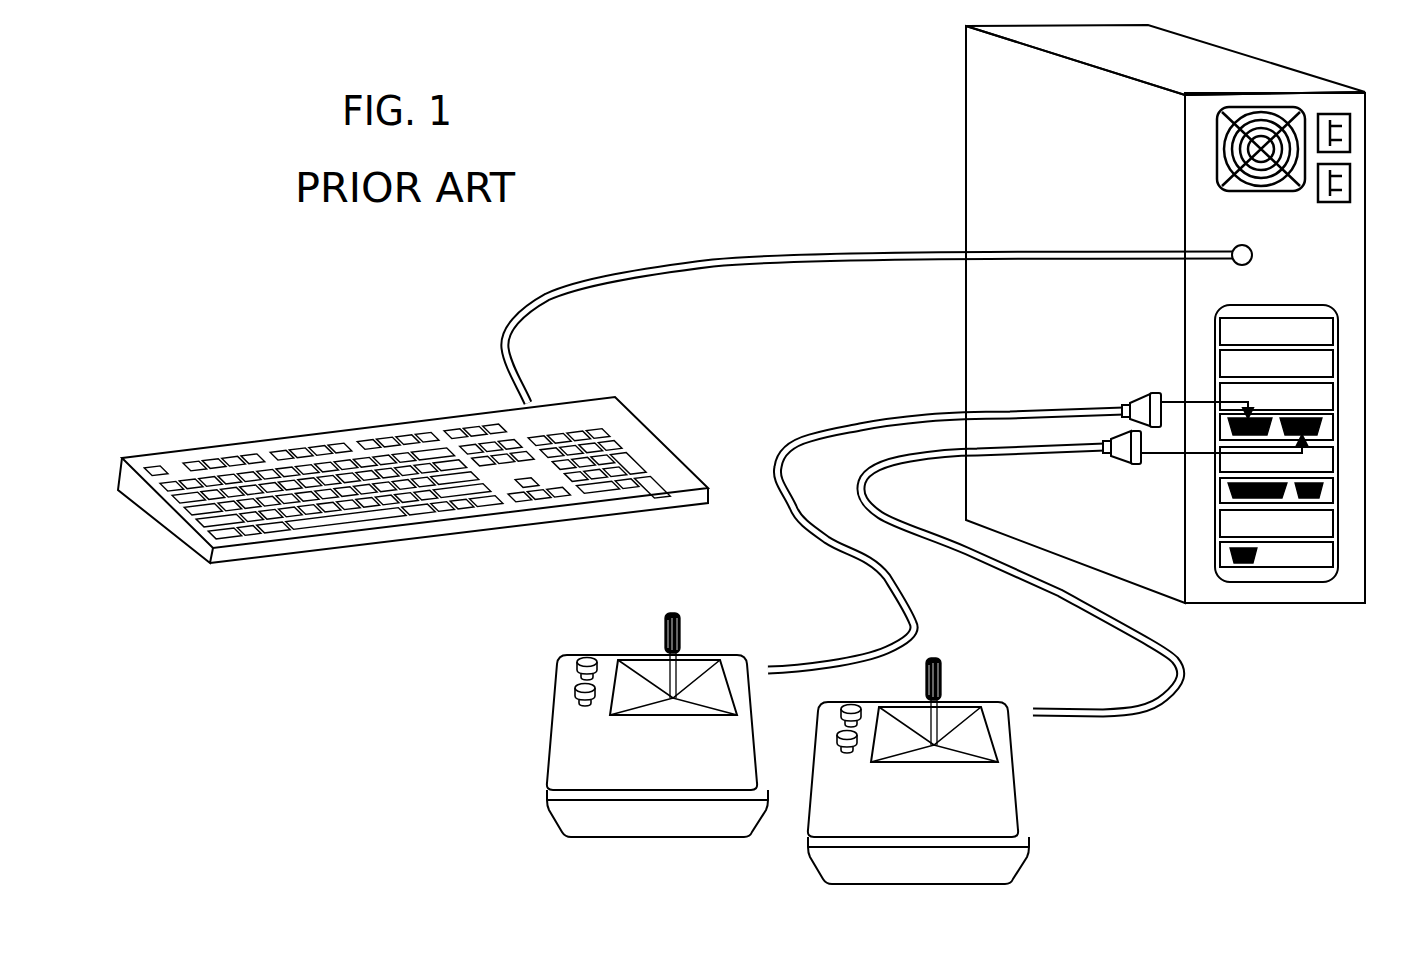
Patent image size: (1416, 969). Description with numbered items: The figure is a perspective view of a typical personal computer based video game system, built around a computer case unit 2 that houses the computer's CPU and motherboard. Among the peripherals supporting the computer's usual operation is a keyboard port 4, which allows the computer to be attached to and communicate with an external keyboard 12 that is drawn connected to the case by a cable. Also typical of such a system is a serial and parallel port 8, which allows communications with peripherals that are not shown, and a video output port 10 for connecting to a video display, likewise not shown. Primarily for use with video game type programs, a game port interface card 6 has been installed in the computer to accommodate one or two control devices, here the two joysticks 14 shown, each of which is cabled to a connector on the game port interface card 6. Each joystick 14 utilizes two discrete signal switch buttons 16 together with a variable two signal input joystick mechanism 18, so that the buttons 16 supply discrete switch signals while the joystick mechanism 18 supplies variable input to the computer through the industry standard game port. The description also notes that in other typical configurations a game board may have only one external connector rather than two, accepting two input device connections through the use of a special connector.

The computer case unit 2 is at (1018, 120).
The keyboard port 4 is at (1258, 248).
The game port interface card 6 is at (1328, 425).
The serial and parallel port 8 is at (1327, 493).
The video output port 10 is at (1270, 555).
The keyboard 12 is at (250, 435).
The joystick 14 is at (587, 748).
The discrete signal switch buttons 16 is at (572, 672).
The joystick mechanism 18 is at (687, 637).